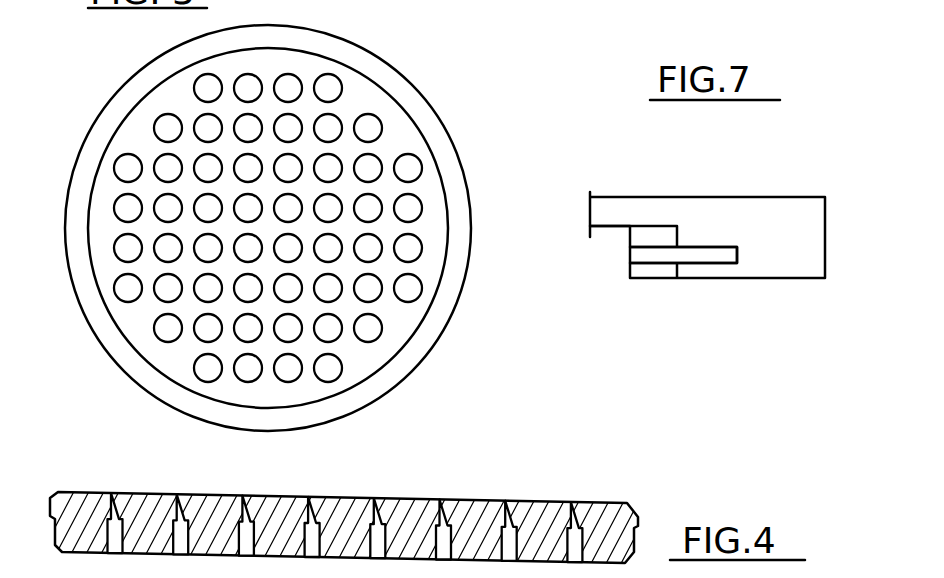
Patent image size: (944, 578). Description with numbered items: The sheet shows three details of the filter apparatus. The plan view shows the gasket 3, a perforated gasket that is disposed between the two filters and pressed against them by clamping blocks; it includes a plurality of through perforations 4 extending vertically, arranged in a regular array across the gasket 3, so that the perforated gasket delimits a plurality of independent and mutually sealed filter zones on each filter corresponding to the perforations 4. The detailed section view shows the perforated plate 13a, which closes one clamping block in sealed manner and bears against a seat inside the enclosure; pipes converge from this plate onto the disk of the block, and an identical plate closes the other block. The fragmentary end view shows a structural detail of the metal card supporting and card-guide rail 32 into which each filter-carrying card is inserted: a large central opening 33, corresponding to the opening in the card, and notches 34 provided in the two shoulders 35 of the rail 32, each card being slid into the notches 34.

In FIG. 3, the gasket 3 is at (118, 68).
In FIG. 3, the through perforations 4 is at (127, 168).
In FIG. 4, the perforated plate 13a is at (119, 488).
In FIG. 7, the card supporting and card-guide rail 32 is at (826, 211).
In FIG. 7, the large central opening 33 is at (606, 228).
In FIG. 7, the notches 34 is at (650, 256).
In FIG. 7, the shoulders 35 is at (746, 211).